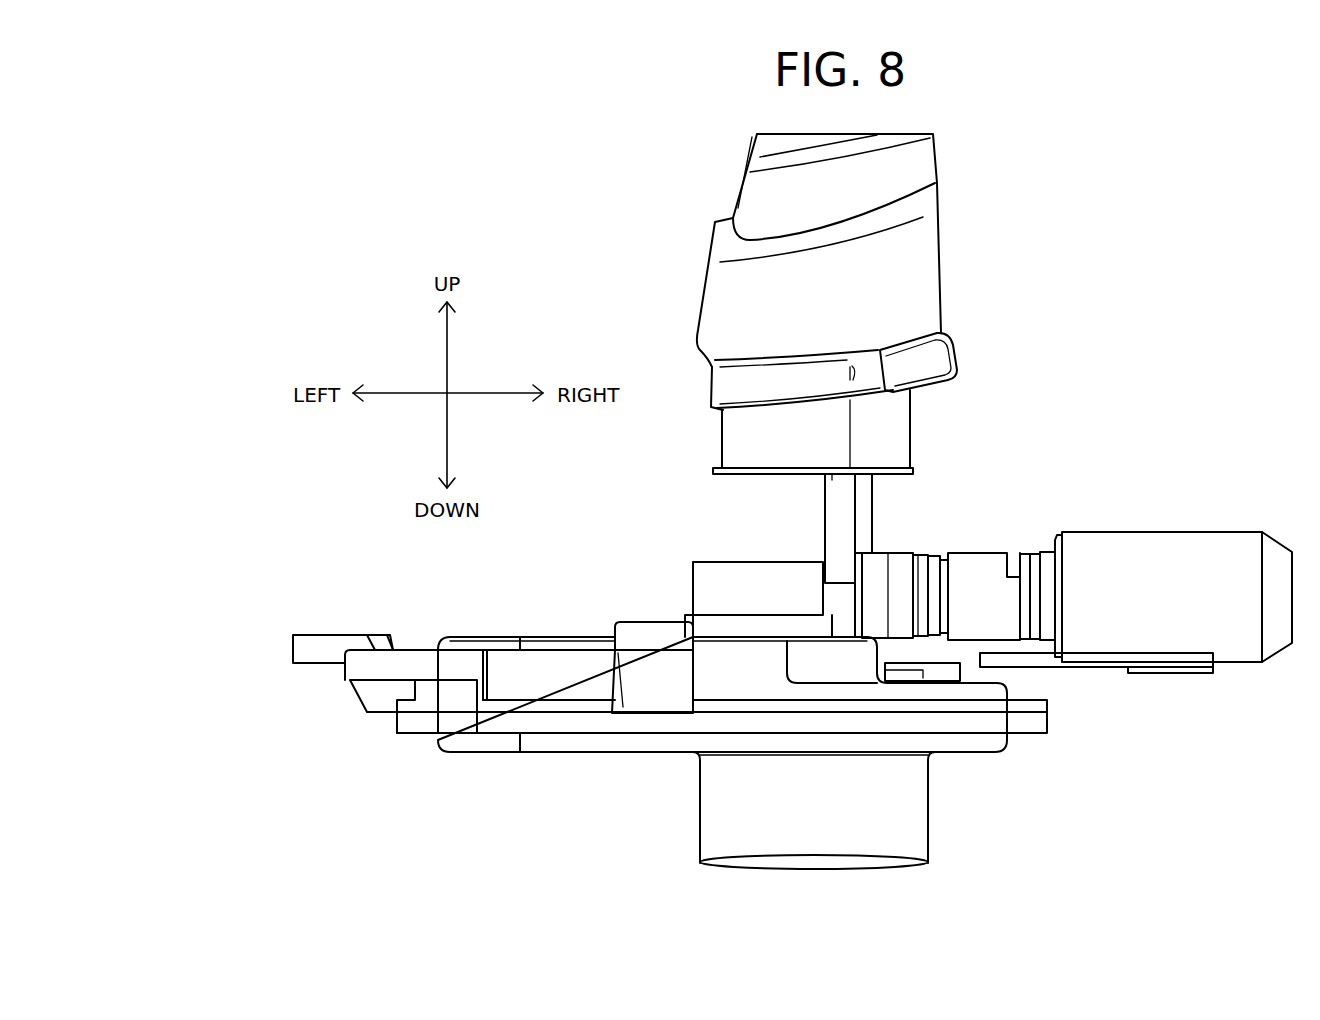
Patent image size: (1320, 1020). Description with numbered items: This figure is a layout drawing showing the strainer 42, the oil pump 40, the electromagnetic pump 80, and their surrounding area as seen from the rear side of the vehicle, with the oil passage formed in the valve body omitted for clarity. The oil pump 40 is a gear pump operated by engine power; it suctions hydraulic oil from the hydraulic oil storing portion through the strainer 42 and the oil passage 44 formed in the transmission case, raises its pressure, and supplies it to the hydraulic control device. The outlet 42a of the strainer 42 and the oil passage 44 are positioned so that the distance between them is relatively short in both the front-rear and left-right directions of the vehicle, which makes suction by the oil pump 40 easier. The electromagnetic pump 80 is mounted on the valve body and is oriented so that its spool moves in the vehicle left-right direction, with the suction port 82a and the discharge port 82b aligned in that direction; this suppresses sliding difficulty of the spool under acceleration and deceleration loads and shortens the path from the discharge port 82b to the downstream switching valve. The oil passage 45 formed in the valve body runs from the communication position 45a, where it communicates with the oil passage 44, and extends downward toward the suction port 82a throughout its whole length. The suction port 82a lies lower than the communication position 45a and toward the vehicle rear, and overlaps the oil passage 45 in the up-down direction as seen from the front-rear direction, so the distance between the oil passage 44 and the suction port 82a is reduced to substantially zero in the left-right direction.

The oil pump 40 is at (750, 343).
The oil passage 44 is at (767, 447).
The oil passage 45 is at (877, 568).
The communication position 45a is at (848, 475).
The strainer 42 is at (580, 675).
The outlet 42a is at (720, 562).
The suction port 82a is at (890, 582).
The discharge port 82b is at (1008, 567).
The electromagnetic pump 80 is at (1127, 567).